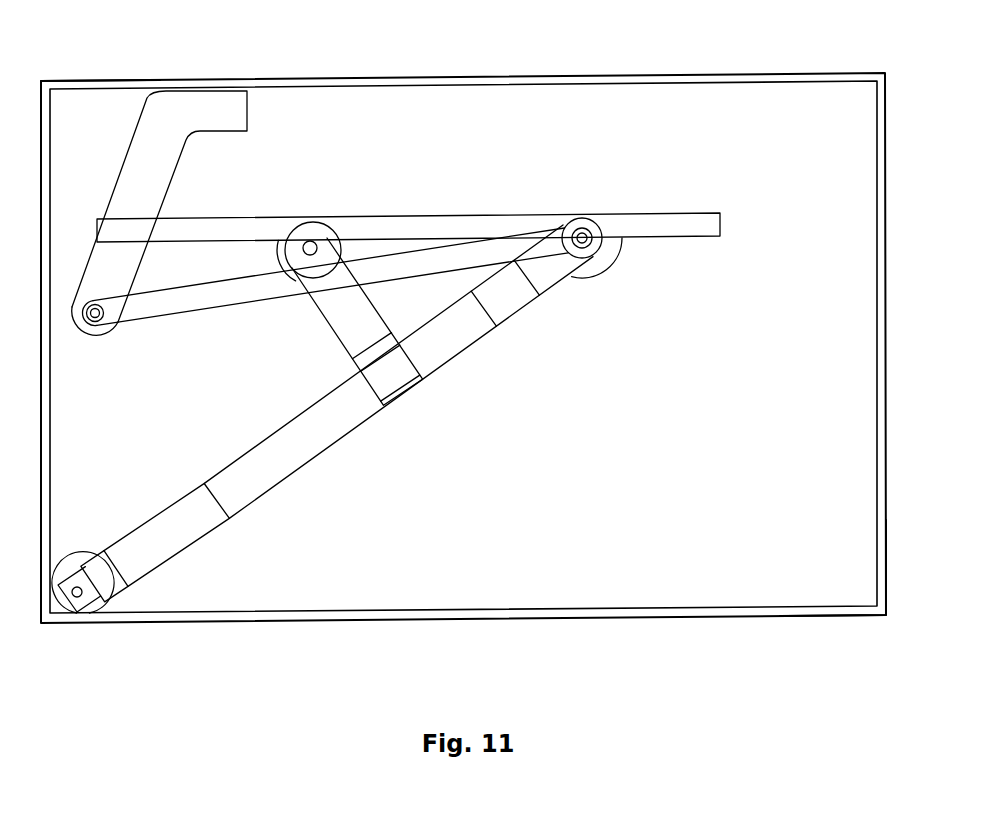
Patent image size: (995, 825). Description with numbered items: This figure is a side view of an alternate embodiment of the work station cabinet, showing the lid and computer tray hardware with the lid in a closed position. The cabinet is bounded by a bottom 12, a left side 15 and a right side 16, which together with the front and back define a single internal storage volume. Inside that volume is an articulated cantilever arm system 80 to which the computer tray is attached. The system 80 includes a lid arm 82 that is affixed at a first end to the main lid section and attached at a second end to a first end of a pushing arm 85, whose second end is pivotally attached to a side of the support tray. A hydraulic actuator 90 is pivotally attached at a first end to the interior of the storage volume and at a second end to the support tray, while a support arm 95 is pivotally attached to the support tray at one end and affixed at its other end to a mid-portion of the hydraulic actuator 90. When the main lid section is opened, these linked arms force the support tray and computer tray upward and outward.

The bottom 12 is at (373, 618).
The left side 15 is at (881, 530).
The right side 16 is at (50, 126).
The articulated cantilever arm system 80 is at (437, 408).
The lid arm 82 is at (162, 175).
The pushing arm 85 is at (184, 300).
The hydraulic actuator 90 is at (298, 455).
The support arm 95 is at (703, 222).